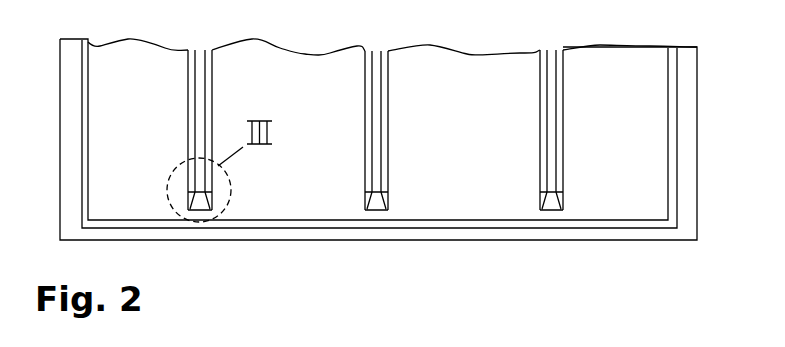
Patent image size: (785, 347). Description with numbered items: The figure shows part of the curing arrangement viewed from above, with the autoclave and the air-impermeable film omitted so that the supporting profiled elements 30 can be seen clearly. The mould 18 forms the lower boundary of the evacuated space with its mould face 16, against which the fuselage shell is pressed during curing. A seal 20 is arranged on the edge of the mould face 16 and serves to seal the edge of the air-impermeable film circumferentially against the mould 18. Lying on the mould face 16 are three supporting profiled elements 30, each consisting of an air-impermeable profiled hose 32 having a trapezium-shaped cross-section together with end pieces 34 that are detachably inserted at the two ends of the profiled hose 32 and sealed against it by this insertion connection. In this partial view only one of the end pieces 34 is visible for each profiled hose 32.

The mould face 16 is at (688, 72).
The mould 18 is at (687, 138).
The seal 20 is at (87, 168).
The supporting profiled element 30 is at (175, 85).
The profiled hose 32 is at (200, 110).
The end piece 34 is at (198, 198).